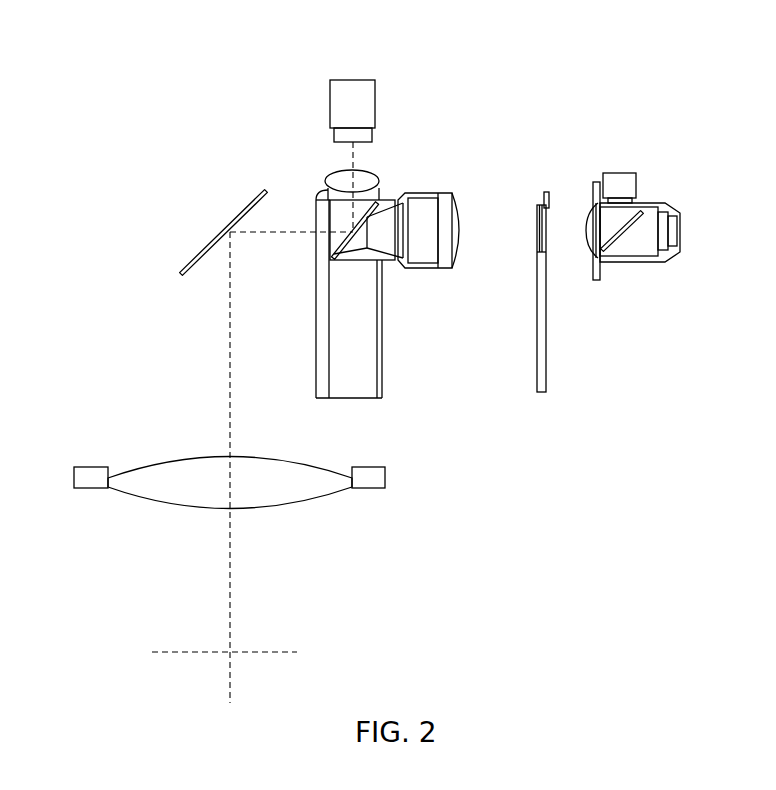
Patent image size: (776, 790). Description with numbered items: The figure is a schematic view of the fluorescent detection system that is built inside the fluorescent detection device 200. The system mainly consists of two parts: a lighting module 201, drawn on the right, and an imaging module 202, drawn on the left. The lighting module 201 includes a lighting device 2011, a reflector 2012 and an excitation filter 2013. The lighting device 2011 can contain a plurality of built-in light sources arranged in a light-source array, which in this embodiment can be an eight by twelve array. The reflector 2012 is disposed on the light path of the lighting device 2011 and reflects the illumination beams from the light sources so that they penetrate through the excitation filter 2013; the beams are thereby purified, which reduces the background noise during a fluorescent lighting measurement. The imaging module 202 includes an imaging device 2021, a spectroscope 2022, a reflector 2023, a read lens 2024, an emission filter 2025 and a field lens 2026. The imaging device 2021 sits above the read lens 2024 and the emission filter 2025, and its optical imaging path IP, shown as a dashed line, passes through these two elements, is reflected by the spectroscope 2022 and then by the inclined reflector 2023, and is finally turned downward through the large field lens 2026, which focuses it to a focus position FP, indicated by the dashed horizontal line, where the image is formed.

The fluorescent detection device 200 is at (712, 128).
The lighting module 201 is at (642, 382).
The imaging module 202 is at (172, 148).
The lighting device 2011 is at (612, 185).
The reflector 2012 is at (630, 228).
The excitation filter 2013 is at (557, 260).
The imaging device 2021 is at (338, 98).
The spectroscope 2022 is at (360, 245).
The reflector 2023 is at (187, 258).
The read lens 2024 is at (368, 177).
The emission filter 2025 is at (370, 198).
The field lens 2026 is at (173, 470).
The focus position FP is at (178, 652).
The optical imaging path IP is at (230, 542).